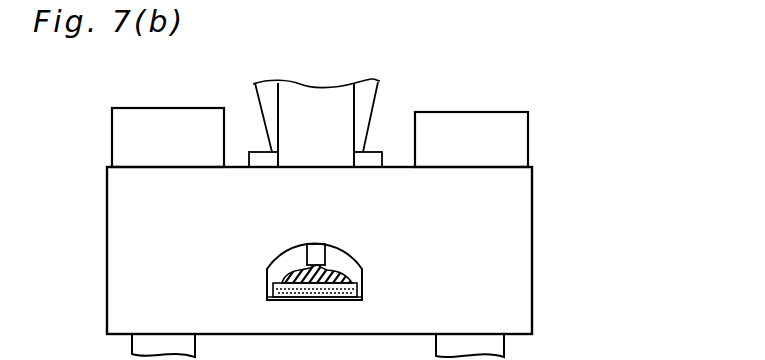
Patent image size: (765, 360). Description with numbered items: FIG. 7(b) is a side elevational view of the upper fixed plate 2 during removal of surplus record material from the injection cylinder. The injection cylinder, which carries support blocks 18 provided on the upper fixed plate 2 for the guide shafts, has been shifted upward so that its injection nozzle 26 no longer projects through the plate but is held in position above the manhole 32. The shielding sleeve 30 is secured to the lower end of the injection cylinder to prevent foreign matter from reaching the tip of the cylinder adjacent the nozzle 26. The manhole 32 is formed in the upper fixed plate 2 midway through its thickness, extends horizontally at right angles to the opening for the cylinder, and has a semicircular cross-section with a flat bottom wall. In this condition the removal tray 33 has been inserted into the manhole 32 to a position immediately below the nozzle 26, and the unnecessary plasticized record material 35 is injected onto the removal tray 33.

The upper fixed plate 2 is at (517, 197).
The support block 18 is at (345, 100).
The shielding sleeve 30 is at (358, 122).
The injection nozzle 26 is at (322, 251).
The manhole 32 is at (342, 262).
The unnecessary plasticized record material 35 is at (350, 278).
The removal tray 33 is at (365, 298).